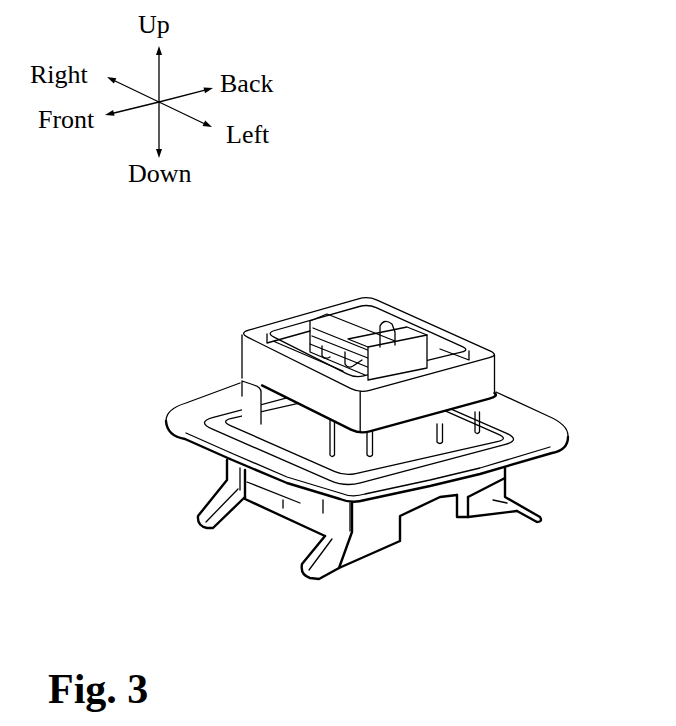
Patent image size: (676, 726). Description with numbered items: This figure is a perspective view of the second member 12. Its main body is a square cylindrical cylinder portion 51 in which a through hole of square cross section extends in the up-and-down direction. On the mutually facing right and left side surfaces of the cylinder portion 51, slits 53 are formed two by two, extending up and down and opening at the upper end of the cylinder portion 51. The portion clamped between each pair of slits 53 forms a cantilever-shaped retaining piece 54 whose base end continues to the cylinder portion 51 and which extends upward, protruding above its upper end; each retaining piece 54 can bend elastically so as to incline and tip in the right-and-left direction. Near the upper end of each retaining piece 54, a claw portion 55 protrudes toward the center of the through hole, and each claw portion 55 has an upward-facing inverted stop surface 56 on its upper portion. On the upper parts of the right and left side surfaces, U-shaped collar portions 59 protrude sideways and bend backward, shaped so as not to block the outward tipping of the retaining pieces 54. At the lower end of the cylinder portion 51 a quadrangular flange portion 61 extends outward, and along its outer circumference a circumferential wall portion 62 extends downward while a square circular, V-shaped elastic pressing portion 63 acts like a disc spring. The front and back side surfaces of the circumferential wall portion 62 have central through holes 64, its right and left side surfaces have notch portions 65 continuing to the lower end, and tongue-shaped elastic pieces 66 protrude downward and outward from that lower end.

The second member 12 is at (363, 411).
The cylinder portion 51 is at (245, 395).
The slits 53 is at (443, 431).
The retaining pieces 54 is at (337, 322).
The claw portions 55 is at (327, 353).
The inverted stop surface 56 is at (378, 330).
The collar portions 59 is at (247, 352).
The flange portion 61 is at (483, 437).
The circumferential wall portion 62 is at (482, 512).
The elastic pressing portion 63 is at (175, 421).
The through holes 64 is at (290, 497).
The notch portions 65 is at (453, 517).
The elastic pieces 66 is at (208, 505).